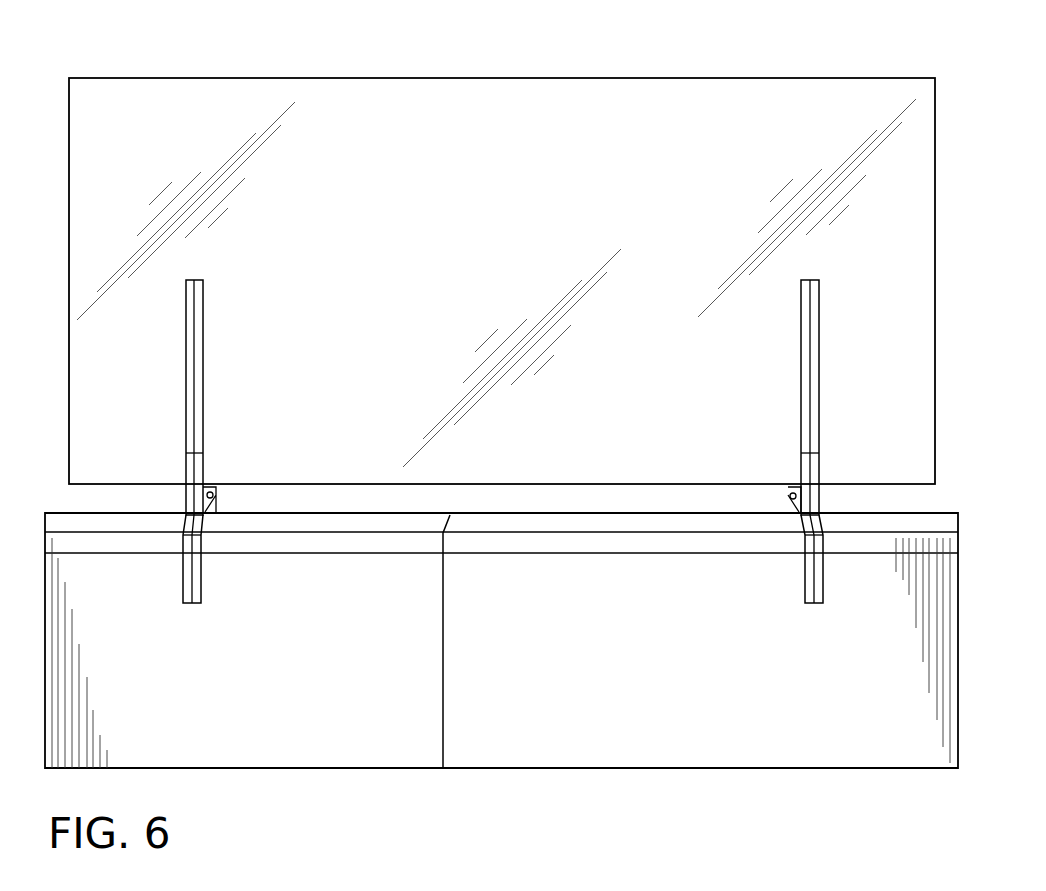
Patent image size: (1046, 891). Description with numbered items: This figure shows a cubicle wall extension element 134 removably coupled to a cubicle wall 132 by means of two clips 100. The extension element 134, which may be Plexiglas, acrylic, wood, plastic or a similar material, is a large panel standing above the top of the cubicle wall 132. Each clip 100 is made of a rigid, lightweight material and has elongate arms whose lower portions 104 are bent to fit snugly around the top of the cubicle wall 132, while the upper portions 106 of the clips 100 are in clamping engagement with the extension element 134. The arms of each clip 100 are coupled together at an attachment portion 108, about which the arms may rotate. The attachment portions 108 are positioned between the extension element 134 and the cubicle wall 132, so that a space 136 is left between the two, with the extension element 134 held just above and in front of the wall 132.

The clip 100 is at (553, 427).
The lower portion 104 is at (202, 583).
The upper portion 106 is at (202, 378).
The attachment portion 108 is at (220, 493).
The cubicle wall 132 is at (622, 523).
The cubicle wall extension element 134 is at (557, 115).
The space 136 is at (547, 505).